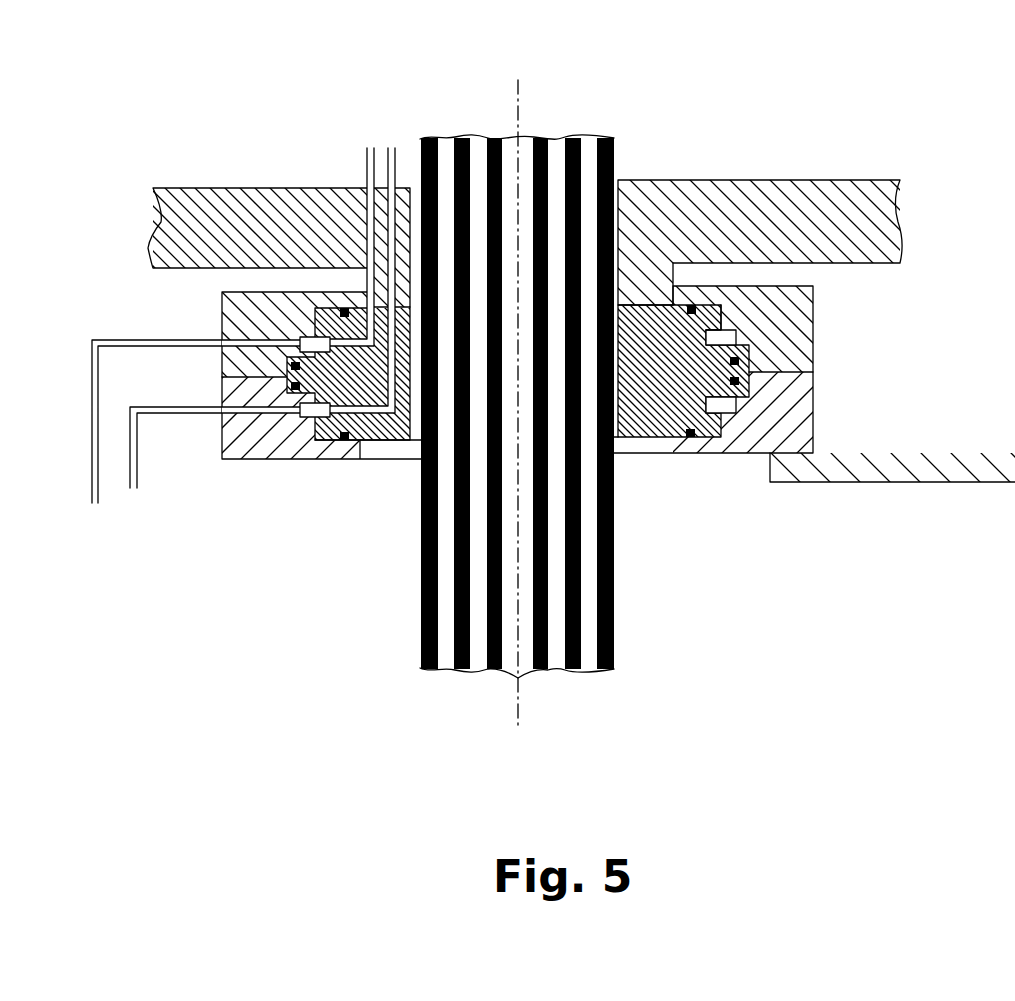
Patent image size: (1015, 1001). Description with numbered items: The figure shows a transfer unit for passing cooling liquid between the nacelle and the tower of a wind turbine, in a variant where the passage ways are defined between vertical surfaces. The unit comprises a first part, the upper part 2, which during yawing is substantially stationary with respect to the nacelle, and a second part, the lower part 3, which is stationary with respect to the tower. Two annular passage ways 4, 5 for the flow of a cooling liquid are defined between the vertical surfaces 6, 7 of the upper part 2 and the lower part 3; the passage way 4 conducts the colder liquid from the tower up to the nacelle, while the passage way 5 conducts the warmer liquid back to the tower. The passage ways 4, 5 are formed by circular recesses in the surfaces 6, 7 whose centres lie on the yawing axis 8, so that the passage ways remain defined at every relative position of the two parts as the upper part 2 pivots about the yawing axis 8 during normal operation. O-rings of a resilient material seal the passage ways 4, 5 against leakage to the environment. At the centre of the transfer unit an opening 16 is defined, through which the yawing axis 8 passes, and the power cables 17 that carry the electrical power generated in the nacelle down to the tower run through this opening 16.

The upper part 2 is at (667, 410).
The lower part 3 is at (805, 358).
The passage way 4 is at (300, 340).
The passage way 5 is at (313, 410).
The surface 6 is at (692, 306).
The surface 7 is at (720, 318).
The yawing axis 8 is at (525, 85).
The opening 16 is at (633, 292).
The power cables 17 is at (495, 132).